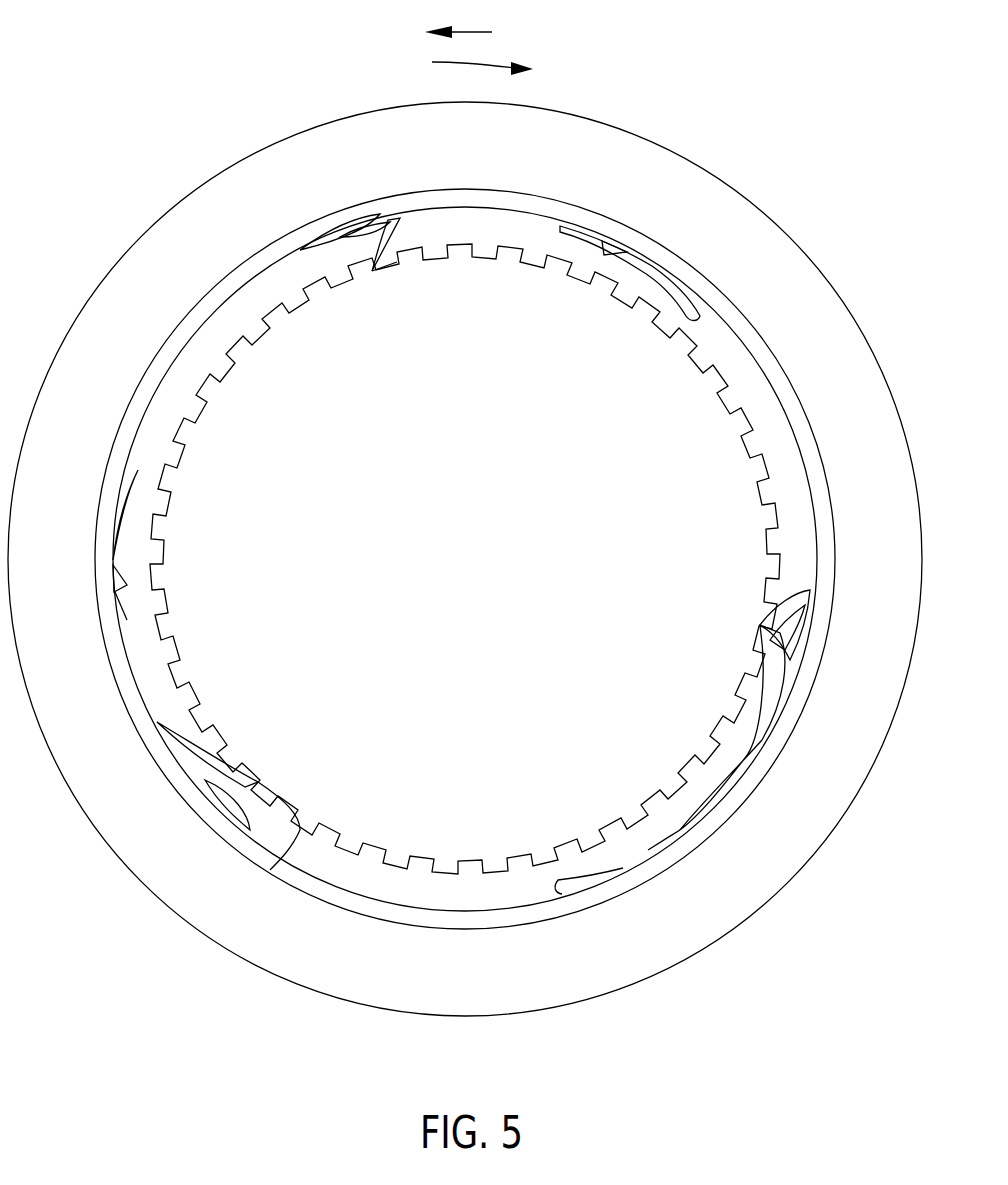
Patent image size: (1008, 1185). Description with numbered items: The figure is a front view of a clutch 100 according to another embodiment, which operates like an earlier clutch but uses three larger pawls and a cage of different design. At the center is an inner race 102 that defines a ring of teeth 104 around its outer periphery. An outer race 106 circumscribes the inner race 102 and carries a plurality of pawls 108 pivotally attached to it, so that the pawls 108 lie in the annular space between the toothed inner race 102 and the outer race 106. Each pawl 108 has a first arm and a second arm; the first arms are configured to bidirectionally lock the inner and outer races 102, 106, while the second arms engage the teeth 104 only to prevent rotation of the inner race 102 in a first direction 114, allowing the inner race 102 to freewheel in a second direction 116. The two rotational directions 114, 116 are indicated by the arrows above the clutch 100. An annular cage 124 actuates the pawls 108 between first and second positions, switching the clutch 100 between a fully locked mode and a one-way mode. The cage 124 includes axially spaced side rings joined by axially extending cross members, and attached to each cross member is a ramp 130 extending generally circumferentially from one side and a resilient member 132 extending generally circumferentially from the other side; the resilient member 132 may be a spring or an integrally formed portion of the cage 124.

The clutch 100 is at (838, 184).
The inner race 102 is at (468, 570).
The teeth 104 is at (300, 833).
The outer race 106 is at (680, 940).
The pawls 108 is at (415, 230).
The first direction 114 is at (530, 38).
The second direction 116 is at (448, 62).
The cage 124 is at (736, 796).
The ramp 130 is at (692, 308).
The resilient member 132 is at (373, 222).